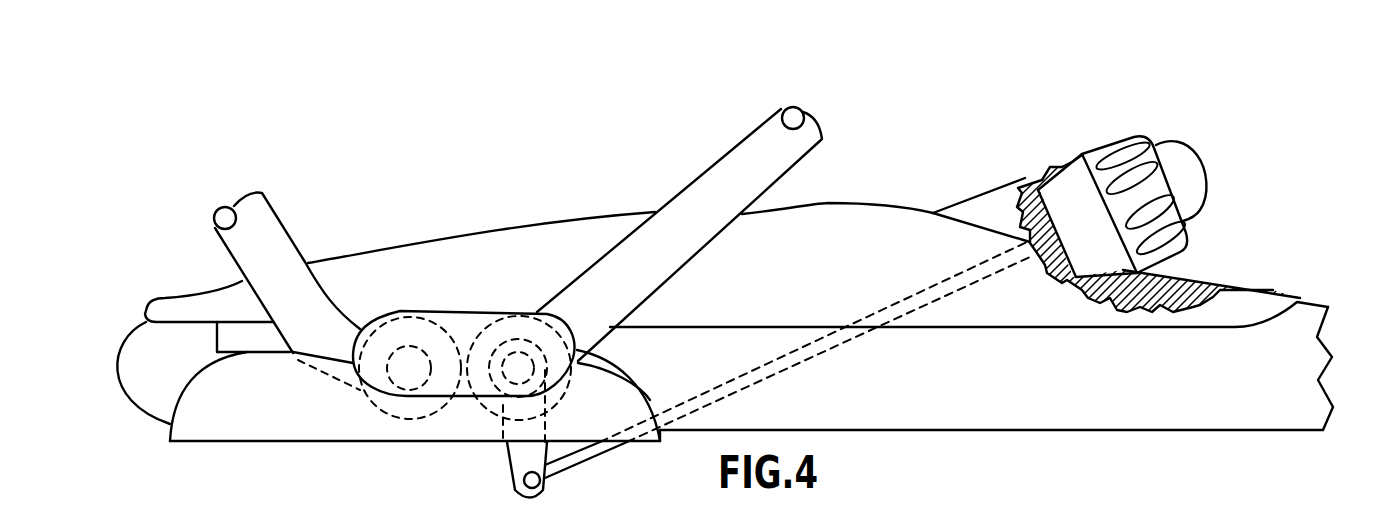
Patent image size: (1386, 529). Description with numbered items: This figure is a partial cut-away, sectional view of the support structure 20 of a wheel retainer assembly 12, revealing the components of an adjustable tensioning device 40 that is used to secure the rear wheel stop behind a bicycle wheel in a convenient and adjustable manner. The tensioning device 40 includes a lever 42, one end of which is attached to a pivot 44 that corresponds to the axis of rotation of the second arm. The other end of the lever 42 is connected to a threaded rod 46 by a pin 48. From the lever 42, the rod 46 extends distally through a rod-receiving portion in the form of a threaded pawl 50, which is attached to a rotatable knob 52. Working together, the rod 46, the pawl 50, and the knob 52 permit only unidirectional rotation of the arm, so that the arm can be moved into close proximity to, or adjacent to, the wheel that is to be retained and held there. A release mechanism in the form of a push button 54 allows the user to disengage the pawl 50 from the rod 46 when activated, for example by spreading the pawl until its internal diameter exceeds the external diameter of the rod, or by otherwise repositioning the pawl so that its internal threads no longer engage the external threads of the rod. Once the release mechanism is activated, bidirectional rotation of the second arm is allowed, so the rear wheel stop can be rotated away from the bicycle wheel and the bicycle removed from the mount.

The wheel retainer assembly 12 is at (380, 212).
The support structure 20 is at (482, 267).
The adjustable tensioning device 40 is at (962, 183).
The lever 42 is at (507, 453).
The pivot 44 is at (518, 364).
The threaded rod 46 is at (867, 317).
The pin 48 is at (540, 485).
The threaded pawl 50 is at (828, 393).
The rotatable knob 52 is at (1120, 133).
The push button 54 is at (1203, 173).